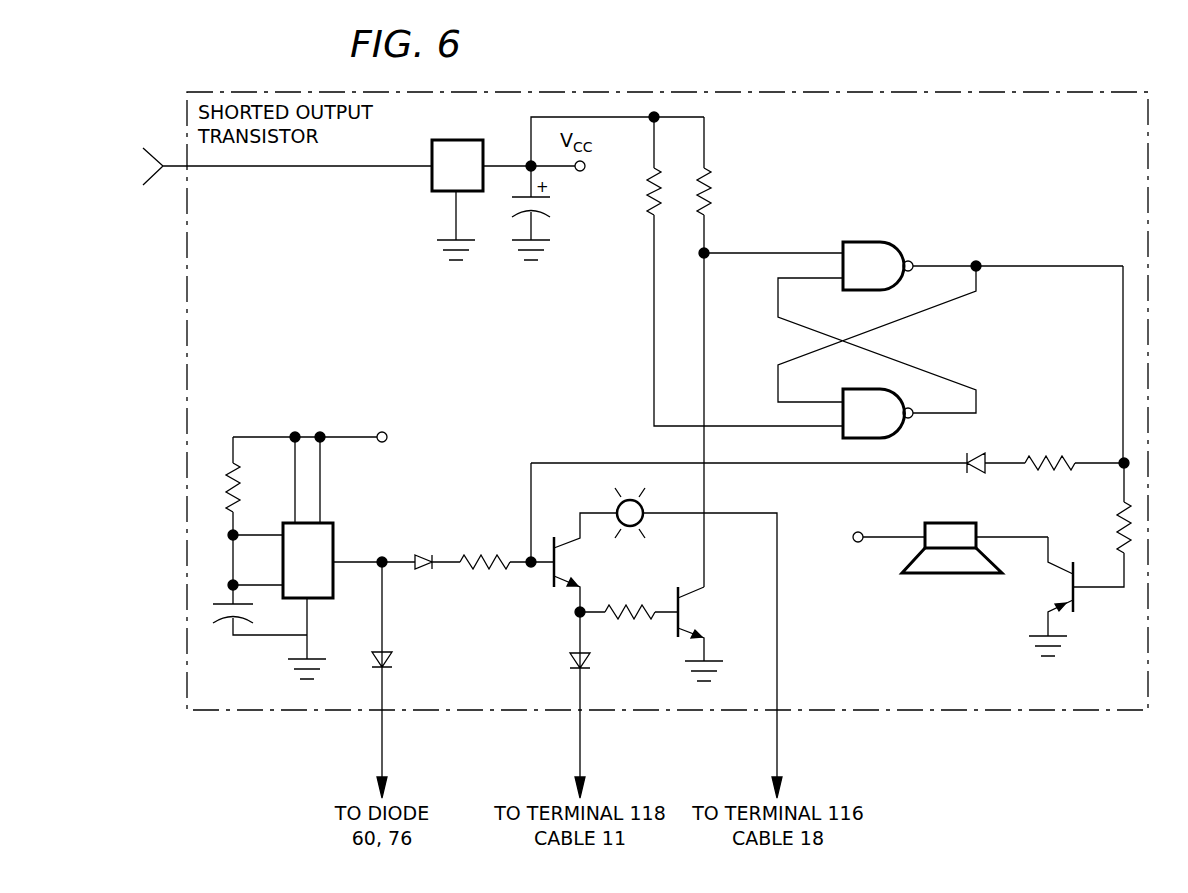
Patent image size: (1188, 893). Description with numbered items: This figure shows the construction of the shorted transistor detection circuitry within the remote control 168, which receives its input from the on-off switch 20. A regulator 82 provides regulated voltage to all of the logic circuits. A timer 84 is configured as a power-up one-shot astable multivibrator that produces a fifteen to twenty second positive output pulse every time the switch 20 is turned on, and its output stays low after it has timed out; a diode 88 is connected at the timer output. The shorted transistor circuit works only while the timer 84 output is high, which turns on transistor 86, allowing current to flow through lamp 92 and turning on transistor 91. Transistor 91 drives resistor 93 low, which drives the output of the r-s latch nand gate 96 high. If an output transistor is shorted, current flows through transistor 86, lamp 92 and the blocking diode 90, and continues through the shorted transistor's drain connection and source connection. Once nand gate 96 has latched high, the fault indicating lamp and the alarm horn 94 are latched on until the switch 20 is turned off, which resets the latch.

The remote control 168 is at (899, 92).
The switch 20 is at (248, 166).
The regulator 82 is at (430, 178).
The timer 84 is at (333, 540).
The transistor 86 is at (562, 556).
The diode 88 is at (388, 661).
The diode 90 is at (590, 665).
The transistor 91 is at (690, 608).
The lamp 92 is at (630, 527).
The resistor 93 is at (712, 196).
The alarm 94 is at (945, 575).
The nand gate 96 is at (866, 241).